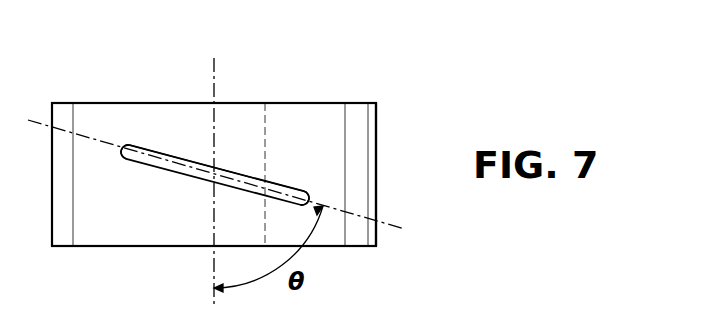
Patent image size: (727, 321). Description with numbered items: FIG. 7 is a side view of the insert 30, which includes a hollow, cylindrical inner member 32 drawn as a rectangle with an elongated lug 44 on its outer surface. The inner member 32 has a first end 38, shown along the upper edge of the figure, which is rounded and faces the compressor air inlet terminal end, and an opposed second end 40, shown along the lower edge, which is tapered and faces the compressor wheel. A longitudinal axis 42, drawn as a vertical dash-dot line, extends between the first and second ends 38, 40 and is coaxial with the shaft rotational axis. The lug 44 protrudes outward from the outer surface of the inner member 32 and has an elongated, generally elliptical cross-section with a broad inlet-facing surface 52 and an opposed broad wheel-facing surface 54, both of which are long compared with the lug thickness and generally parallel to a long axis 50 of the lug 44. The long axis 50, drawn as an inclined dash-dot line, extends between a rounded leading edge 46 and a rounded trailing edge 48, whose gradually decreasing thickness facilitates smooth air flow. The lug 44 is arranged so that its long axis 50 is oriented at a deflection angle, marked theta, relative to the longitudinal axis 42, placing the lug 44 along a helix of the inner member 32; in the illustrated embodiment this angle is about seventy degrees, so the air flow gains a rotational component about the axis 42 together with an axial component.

The insert 30 is at (140, 203).
The inner member 32 is at (360, 132).
The first end 38 is at (88, 103).
The second end 40 is at (345, 247).
The longitudinal axis 42 is at (214, 75).
The lug 44 is at (194, 209).
The wheel-facing surface 54 is at (200, 179).
The leading edge 46 is at (126, 143).
The trailing edge 48 is at (307, 190).
The long axis 50 is at (397, 228).
The inlet-facing surface 52 is at (278, 181).